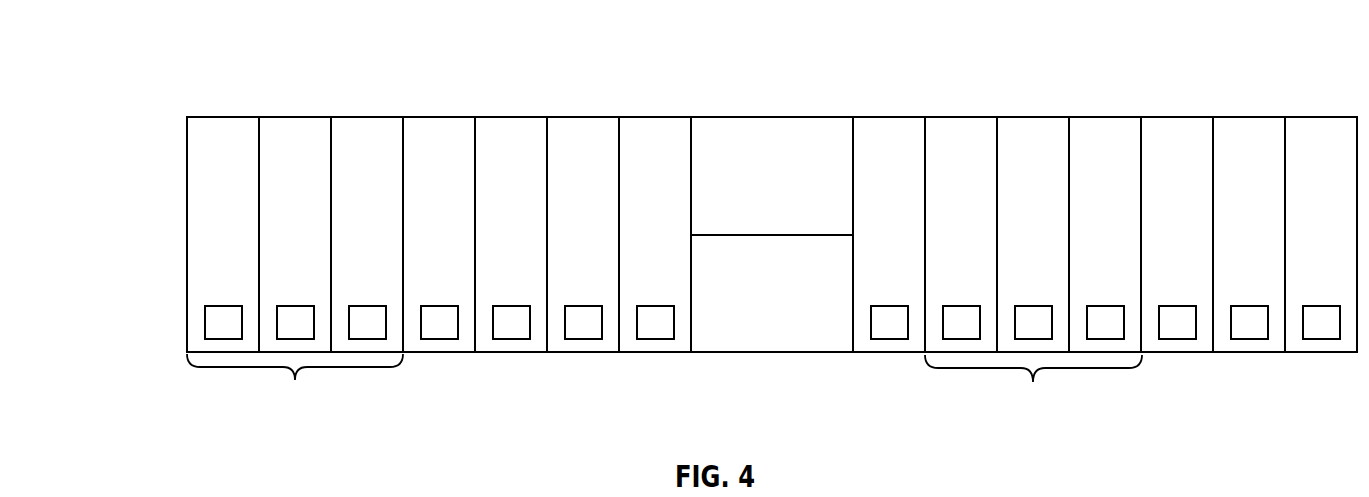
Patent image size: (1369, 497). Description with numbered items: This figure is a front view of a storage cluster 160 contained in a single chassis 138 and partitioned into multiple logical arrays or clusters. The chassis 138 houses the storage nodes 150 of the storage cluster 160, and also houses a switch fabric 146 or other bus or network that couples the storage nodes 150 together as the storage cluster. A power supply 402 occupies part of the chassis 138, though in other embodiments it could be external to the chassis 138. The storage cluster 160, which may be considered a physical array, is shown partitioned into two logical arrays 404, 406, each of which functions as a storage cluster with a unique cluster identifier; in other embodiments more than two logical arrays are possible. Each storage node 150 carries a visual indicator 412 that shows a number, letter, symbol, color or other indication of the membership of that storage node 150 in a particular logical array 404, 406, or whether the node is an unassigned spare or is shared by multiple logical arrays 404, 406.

The storage cluster 160 is at (167, 91).
The chassis 138 is at (777, 116).
The storage node 150 is at (1342, 184).
The switch fabric 146 is at (752, 223).
The power supply 402 is at (752, 340).
The visual indicator 412 is at (205, 322).
The logical array 404 is at (291, 412).
The logical array 406 is at (1030, 413).